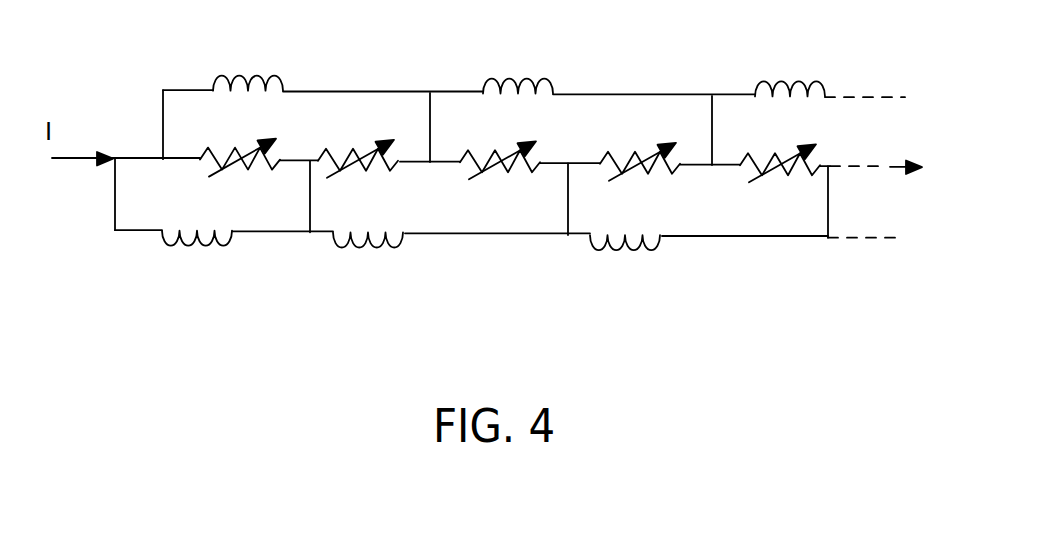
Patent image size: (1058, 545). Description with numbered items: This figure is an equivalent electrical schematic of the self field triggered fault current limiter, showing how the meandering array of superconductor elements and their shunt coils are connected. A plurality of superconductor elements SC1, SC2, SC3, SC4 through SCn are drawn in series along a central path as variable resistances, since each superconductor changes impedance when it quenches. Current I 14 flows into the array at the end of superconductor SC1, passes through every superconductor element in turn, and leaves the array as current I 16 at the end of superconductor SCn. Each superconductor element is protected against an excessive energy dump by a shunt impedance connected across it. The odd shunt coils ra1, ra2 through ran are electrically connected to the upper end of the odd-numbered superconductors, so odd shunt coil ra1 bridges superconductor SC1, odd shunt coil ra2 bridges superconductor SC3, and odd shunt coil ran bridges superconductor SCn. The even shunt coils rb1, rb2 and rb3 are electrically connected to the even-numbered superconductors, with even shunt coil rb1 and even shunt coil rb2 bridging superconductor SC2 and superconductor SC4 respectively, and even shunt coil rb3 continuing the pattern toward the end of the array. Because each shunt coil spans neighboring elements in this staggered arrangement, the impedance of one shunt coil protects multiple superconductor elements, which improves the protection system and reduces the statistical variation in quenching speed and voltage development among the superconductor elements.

The input current I 14 is at (80, 158).
The output current I 16 is at (878, 170).
The odd shunt coil ra1 is at (240, 76).
The odd shunt coil ra2 is at (508, 79).
The odd shunt coil ran is at (780, 82).
The even shunt coil rb1 is at (203, 246).
The even shunt coil rb2 is at (377, 248).
The even shunt coil rb3 is at (633, 251).
The superconductor element SC1 is at (242, 150).
The superconductor element SC2 is at (357, 173).
The superconductor element SC3 is at (500, 148).
The superconductor element SC4 is at (634, 178).
The superconductor element SCn is at (778, 157).